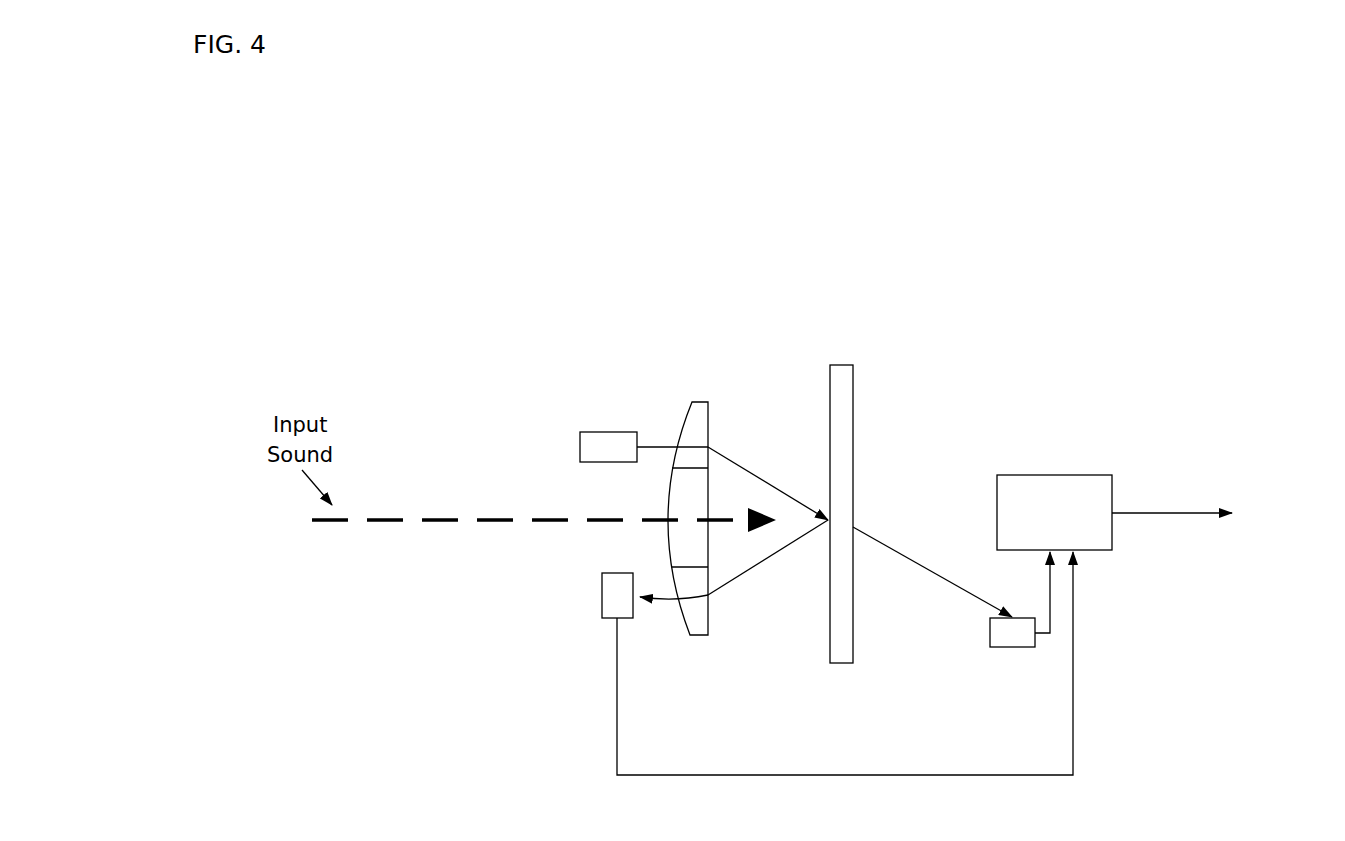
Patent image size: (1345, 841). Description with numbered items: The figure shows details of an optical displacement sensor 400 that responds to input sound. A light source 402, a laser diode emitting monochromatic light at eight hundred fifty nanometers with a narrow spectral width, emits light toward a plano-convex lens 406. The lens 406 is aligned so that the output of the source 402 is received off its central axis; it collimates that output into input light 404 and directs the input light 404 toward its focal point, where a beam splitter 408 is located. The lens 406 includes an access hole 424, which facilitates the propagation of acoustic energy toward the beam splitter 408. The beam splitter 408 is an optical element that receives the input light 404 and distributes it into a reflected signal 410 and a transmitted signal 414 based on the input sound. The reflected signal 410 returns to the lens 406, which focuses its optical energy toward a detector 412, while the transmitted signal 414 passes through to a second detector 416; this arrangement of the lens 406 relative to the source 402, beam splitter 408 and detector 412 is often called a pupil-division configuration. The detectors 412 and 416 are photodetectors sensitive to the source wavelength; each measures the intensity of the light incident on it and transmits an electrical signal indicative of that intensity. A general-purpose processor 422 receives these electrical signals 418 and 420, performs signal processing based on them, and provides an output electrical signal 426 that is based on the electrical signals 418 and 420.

The optical displacement sensor 400 is at (540, 233).
The light source 402 is at (561, 407).
The input light 404 is at (732, 466).
The lens 406 is at (653, 494).
The beam splitter 408 is at (898, 508).
The reflected signal 410 is at (734, 575).
The detector 412 is at (559, 632).
The transmitted signal 414 is at (932, 578).
The detector 416 is at (980, 653).
The electrical signal 418 is at (883, 663).
The electrical signal 420 is at (1092, 592).
The processor 422 is at (1037, 480).
The access hole 424 is at (581, 570).
The electrical signal 426 is at (1214, 459).